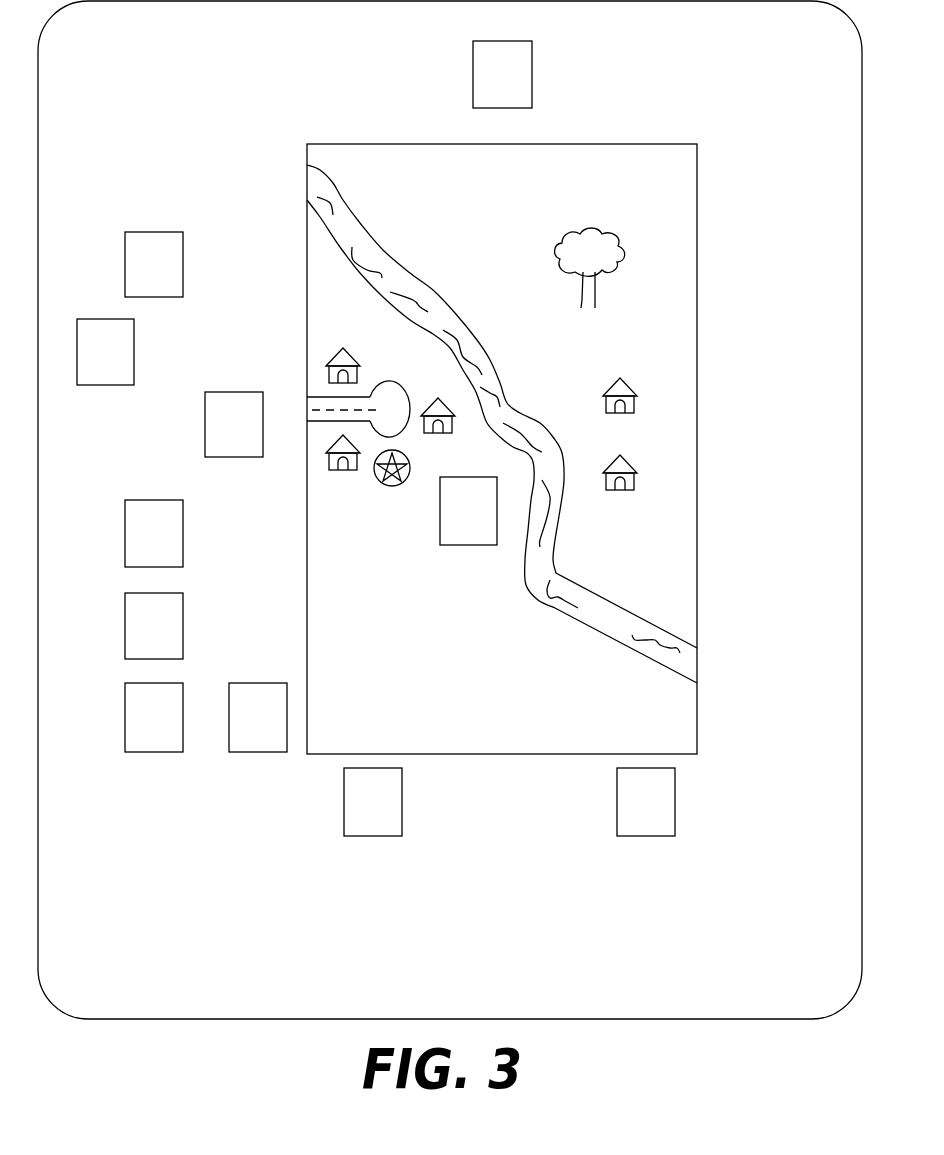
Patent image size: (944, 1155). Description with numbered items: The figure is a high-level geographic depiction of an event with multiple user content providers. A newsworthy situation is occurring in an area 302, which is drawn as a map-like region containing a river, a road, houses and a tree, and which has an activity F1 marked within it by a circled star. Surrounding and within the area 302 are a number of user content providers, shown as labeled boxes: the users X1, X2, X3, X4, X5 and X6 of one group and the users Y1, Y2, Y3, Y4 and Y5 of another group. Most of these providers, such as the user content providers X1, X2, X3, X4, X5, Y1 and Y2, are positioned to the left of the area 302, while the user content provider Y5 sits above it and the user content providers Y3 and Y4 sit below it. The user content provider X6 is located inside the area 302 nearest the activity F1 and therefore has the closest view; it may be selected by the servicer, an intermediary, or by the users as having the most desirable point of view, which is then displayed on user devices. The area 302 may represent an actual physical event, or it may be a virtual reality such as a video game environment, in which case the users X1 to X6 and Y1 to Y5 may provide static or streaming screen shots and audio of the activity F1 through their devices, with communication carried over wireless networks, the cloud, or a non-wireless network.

The area 302 is at (532, 449).
The activity F1 is at (392, 486).
The user content provider X1 is at (154, 264).
The user content provider X2 is at (105, 352).
The user content provider X3 is at (234, 424).
The user content provider X4 is at (154, 626).
The user content provider X5 is at (258, 717).
The user content provider X6 is at (468, 511).
The user content provider Y1 is at (154, 533).
The user content provider Y2 is at (154, 717).
The user content provider Y3 is at (373, 802).
The user content provider Y4 is at (646, 802).
The user content provider Y5 is at (502, 74).